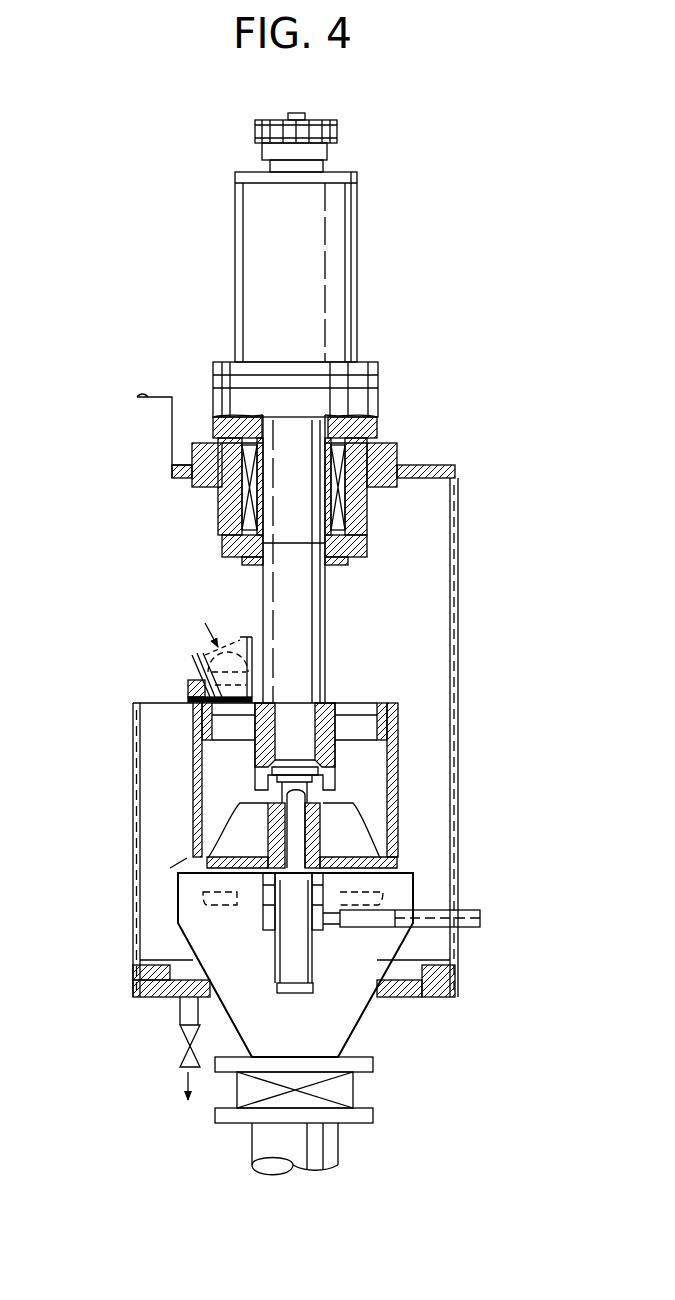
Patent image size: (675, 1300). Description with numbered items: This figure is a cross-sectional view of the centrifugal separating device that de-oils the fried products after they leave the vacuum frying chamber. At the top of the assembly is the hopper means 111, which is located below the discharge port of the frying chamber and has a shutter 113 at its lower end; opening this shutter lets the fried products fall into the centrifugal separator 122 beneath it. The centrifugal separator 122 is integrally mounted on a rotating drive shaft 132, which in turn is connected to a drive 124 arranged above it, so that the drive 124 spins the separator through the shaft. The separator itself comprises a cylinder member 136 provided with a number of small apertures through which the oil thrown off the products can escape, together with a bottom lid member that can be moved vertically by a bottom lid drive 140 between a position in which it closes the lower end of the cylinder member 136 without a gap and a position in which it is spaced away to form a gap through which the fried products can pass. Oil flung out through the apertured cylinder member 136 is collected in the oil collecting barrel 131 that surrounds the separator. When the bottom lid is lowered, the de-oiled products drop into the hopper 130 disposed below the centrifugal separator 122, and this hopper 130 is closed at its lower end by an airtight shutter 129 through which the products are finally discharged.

The hopper means 111 is at (185, 655).
The shutter 113 is at (190, 678).
The centrifugal separator 122 is at (186, 783).
The drive 124 is at (392, 307).
The airtight shutter 129 is at (358, 1080).
The hopper 130 is at (370, 1007).
The oil collecting barrel 131 is at (133, 952).
The rotating drive shaft 132 is at (313, 653).
The cylinder member 136 is at (398, 722).
The bottom lid drive 140 is at (482, 927).